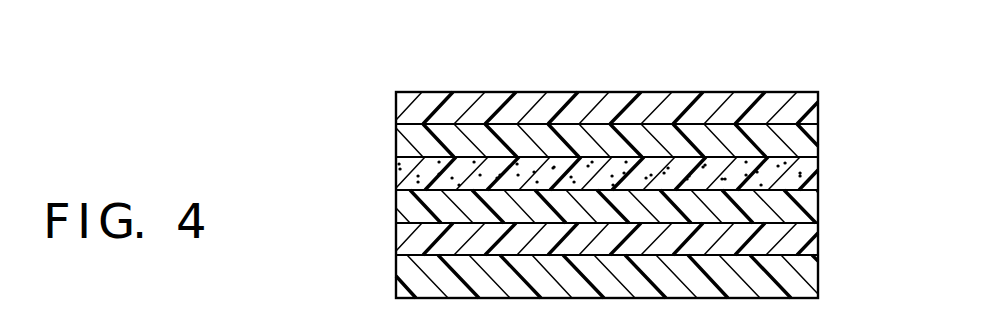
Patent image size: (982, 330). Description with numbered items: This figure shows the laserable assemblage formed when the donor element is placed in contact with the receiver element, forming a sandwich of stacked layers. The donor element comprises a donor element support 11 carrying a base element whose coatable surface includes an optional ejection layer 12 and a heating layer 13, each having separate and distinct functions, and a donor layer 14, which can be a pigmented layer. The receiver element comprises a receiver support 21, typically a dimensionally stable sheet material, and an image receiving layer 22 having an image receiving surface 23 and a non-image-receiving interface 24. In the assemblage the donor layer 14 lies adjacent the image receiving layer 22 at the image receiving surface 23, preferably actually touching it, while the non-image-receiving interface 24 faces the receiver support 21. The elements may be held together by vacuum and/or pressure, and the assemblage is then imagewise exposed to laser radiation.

The donor element support 11 is at (818, 277).
The ejection layer 12 is at (818, 235).
The heating layer 13 is at (818, 207).
The donor layer 14 is at (818, 173).
The receiver support 21 is at (818, 108).
The image receiving layer 22 is at (818, 139).
The image receiving surface 23 is at (742, 157).
The non-image-receiving interface 24 is at (780, 124).